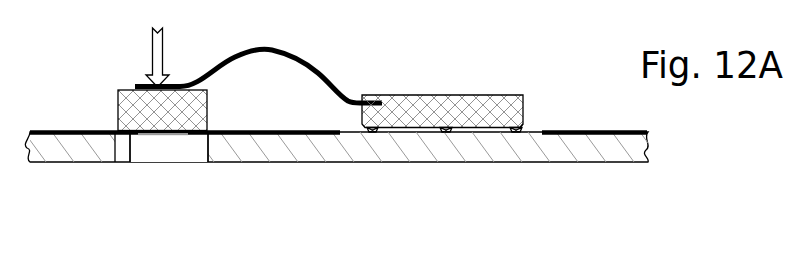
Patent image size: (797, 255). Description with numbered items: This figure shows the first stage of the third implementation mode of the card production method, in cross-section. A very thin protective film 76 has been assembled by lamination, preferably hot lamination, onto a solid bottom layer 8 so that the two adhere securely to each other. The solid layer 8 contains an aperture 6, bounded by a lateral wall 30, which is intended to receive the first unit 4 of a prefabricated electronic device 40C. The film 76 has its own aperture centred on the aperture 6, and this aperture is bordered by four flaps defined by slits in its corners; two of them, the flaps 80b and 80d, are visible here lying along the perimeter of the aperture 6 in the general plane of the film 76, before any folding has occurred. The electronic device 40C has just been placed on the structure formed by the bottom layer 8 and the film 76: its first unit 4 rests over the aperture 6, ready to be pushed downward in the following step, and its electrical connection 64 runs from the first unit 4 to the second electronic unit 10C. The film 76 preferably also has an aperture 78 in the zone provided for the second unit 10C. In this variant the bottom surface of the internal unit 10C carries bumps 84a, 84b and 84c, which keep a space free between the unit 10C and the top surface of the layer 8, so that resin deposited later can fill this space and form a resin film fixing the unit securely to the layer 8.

The first unit 4 is at (127, 119).
The aperture 6 is at (153, 174).
The solid layer 8 is at (68, 158).
The second electronic unit 10C is at (483, 107).
The lateral wall 30 is at (204, 160).
The electronic device 40C is at (432, 115).
The electrical connection 64 is at (305, 55).
The protective film 76 is at (47, 130).
The aperture 78 is at (534, 115).
The flap 80b is at (128, 162).
The flap 80d is at (192, 136).
The bump 84a is at (367, 134).
The bump 84b is at (442, 134).
The bump 84c is at (508, 134).